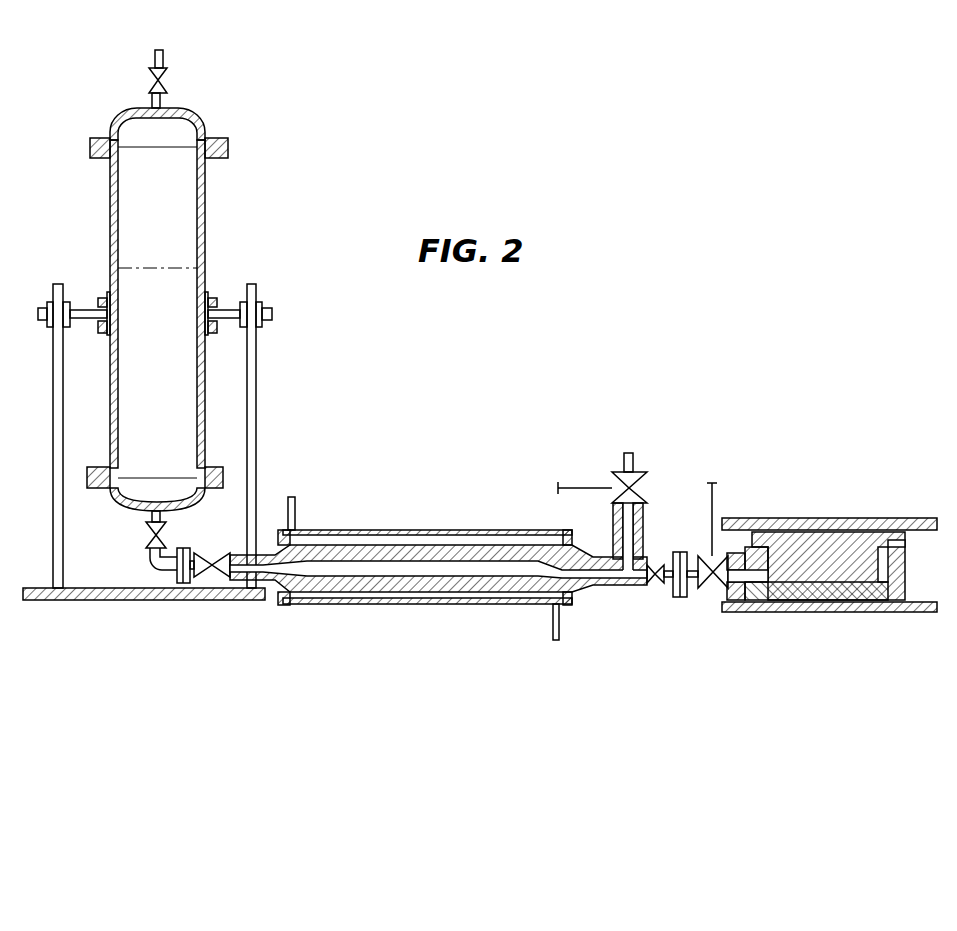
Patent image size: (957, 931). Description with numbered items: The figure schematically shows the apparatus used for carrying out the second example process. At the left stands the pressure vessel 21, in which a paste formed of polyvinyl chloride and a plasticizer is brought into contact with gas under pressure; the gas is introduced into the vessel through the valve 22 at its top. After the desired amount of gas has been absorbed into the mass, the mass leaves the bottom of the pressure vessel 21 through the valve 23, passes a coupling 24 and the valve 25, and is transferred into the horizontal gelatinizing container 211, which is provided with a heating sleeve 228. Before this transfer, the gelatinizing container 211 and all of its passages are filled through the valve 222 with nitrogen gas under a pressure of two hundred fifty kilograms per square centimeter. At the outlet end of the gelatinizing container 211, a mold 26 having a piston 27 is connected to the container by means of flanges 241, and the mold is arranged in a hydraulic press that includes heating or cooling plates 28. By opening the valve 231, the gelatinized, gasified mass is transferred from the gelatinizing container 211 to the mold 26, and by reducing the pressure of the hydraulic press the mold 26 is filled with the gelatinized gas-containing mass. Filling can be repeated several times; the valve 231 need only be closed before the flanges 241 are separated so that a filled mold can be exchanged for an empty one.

The pressure vessel 21 is at (207, 228).
The valve 22 is at (167, 90).
The valve 23 is at (147, 531).
The pipe coupling flange 24 is at (177, 580).
The valve 25 is at (223, 580).
The gelatinizing container 211 is at (370, 553).
The heating sleeve 228 is at (466, 522).
The valve 222 is at (642, 477).
The valve 231 is at (658, 580).
The flanges 241 is at (678, 598).
The mold 26 is at (797, 592).
The piston 27 is at (880, 565).
The heating or cooling plates 28 is at (842, 501).